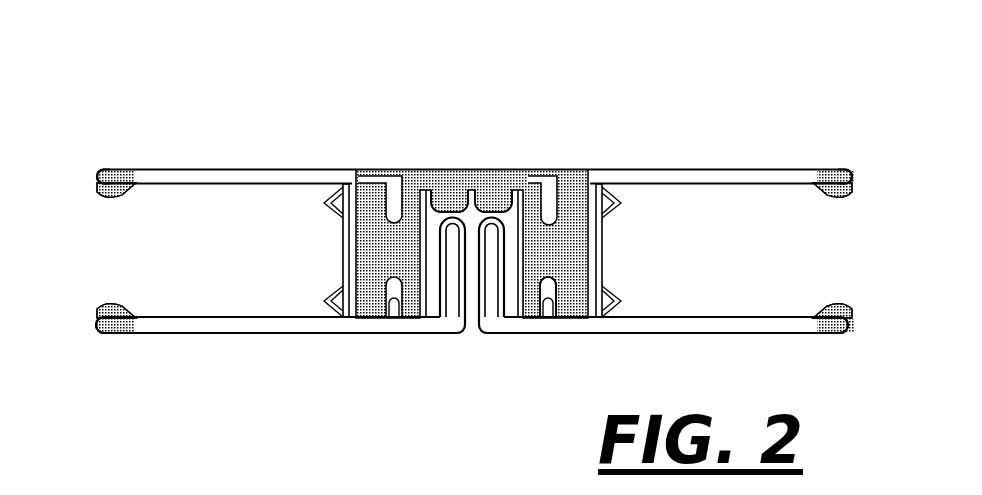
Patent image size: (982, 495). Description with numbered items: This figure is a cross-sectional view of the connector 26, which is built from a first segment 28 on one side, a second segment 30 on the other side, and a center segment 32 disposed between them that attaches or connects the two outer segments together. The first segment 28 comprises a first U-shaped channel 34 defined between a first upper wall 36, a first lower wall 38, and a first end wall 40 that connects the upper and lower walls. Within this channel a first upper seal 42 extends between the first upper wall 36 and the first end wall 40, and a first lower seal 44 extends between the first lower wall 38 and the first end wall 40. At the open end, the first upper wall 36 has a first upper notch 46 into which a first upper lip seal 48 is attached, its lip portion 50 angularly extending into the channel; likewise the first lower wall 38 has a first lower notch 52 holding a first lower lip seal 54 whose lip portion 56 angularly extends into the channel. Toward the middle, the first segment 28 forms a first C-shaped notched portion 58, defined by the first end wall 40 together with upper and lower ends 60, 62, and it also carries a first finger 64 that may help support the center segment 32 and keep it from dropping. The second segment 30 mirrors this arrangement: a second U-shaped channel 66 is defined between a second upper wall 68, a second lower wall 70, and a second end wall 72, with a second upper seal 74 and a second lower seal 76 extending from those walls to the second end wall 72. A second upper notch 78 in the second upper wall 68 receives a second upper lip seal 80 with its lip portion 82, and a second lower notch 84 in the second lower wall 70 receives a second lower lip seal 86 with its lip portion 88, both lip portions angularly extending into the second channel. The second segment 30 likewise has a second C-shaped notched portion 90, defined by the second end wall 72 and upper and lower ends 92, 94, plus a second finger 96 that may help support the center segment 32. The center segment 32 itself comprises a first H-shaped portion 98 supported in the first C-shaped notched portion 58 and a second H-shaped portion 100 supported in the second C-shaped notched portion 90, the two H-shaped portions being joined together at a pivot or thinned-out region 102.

The connector 26 is at (230, 70).
The first segment 28 is at (224, 136).
The second segment 30 is at (722, 132).
The center segment 32 is at (467, 242).
The first U-shaped channel 34 is at (246, 241).
The first upper wall 36 is at (237, 180).
The first lower wall 38 is at (280, 292).
The first end wall 40 is at (343, 250).
The first upper seal 42 is at (328, 198).
The first lower seal 44 is at (328, 303).
The first upper notch 46 is at (108, 182).
The first upper lip seal 48 is at (104, 192).
The lip portion 50 is at (120, 192).
The first lower notch 52 is at (99, 335).
The first lower lip seal 54 is at (108, 313).
The lip portion 56 is at (124, 308).
The first C-shaped notched portion 58 is at (368, 324).
The upper end 60 is at (397, 203).
The lower end 62 is at (396, 298).
The first finger 64 is at (460, 300).
The second U-shaped channel 66 is at (691, 235).
The second upper wall 68 is at (698, 172).
The second lower wall 70 is at (666, 290).
The second end wall 72 is at (602, 249).
The second upper seal 74 is at (620, 200).
The second lower seal 76 is at (620, 303).
The second upper notch 78 is at (838, 170).
The second upper lip seal 80 is at (840, 192).
The lip portion 82 is at (818, 194).
The second lower notch 84 is at (832, 338).
The second lower lip seal 86 is at (840, 310).
The lip portion 88 is at (818, 309).
The second C-shaped notched portion 90 is at (578, 326).
The upper end 92 is at (549, 210).
The lower end 94 is at (540, 290).
The second finger 96 is at (487, 298).
The first H-shaped portion 98 is at (378, 235).
The second H-shaped portion 100 is at (570, 235).
The pivot or thinned-out region 102 is at (470, 188).